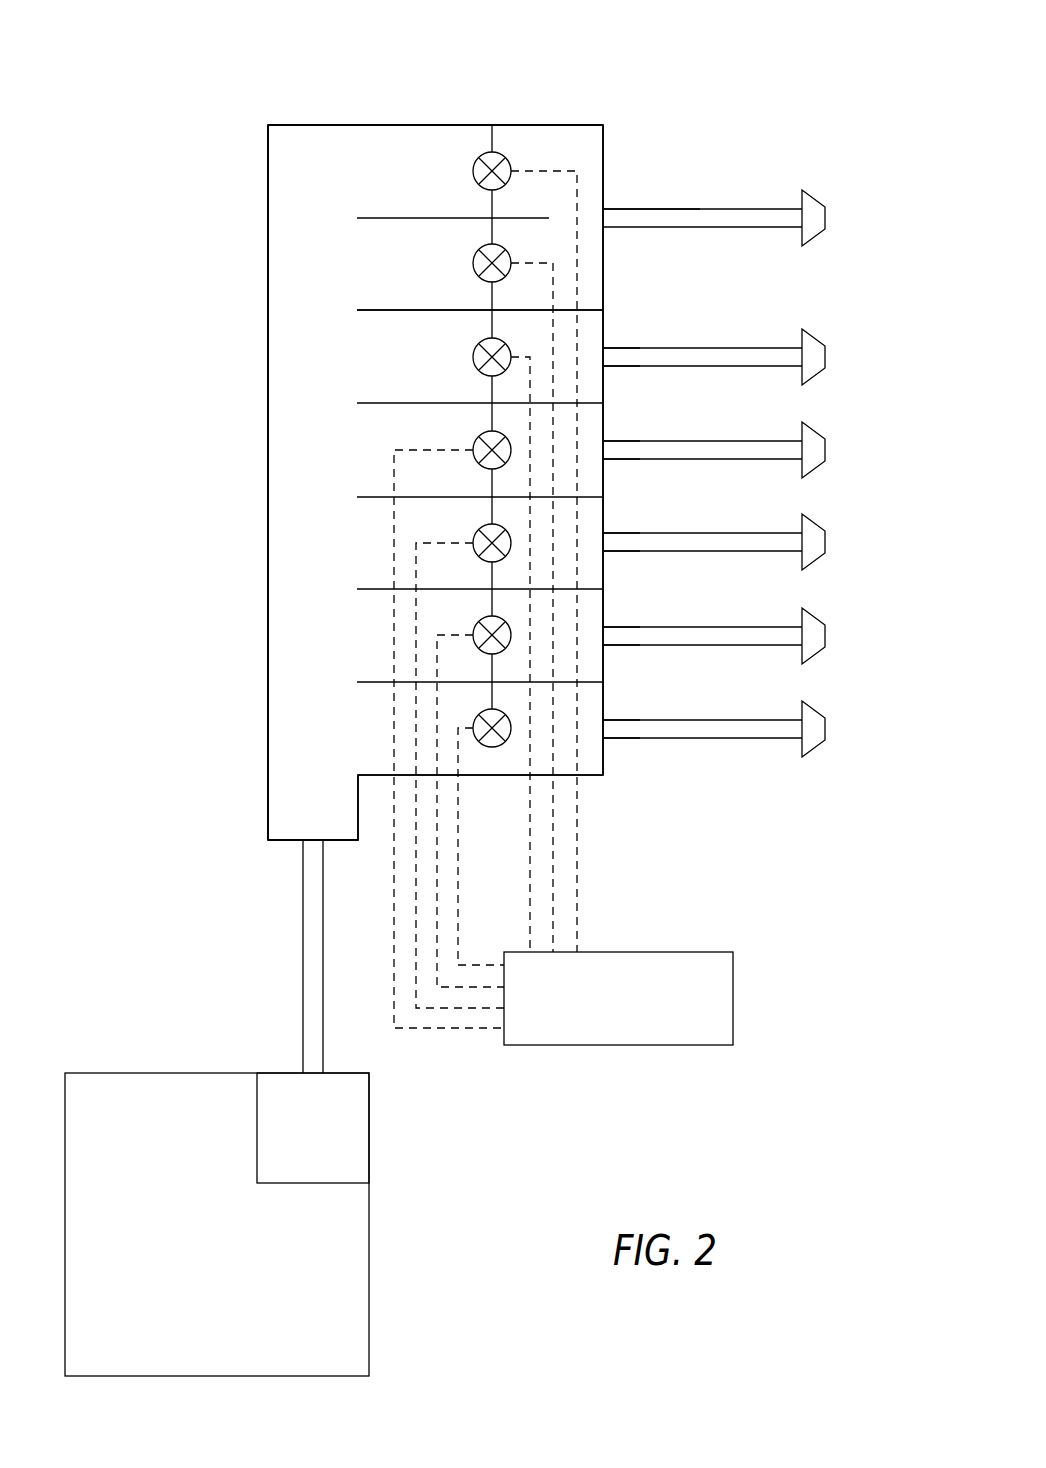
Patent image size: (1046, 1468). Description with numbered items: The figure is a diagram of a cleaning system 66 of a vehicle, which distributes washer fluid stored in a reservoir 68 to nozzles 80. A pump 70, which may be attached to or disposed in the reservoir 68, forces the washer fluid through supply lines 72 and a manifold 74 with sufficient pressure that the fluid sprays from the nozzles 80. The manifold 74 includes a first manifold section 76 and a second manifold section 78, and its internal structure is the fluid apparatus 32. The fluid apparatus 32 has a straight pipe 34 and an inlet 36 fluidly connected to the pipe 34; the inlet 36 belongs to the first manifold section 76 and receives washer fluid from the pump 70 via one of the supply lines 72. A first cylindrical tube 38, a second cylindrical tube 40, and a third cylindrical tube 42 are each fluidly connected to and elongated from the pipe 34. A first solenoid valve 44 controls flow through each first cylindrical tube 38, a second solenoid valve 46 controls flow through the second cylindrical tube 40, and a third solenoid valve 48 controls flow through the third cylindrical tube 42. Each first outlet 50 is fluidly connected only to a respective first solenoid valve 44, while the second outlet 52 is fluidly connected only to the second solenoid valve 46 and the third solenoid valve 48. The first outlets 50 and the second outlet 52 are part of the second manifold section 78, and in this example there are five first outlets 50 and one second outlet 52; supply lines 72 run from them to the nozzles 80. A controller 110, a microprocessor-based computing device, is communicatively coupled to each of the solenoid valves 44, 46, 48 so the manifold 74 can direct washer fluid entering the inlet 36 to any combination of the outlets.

The fluid apparatus 32 is at (474, 77).
The straight pipe 34 is at (307, 385).
The inlet 36 is at (283, 818).
The first cylindrical tube 38 is at (604, 369).
The second cylindrical tube 40 is at (385, 263).
The third cylindrical tube 42 is at (385, 171).
The first solenoid valve 44 is at (477, 364).
The second solenoid valve 46 is at (476, 270).
The third solenoid valve 48 is at (476, 178).
The first outlet 50 is at (606, 353).
The second outlet 52 is at (606, 214).
The cleaning system 66 is at (96, 172).
The reservoir 68 is at (369, 1238).
The pump 70 is at (369, 1125).
The supply line 72 is at (697, 227).
The manifold 74 is at (312, 117).
The first manifold section 76 is at (370, 124).
The second manifold section 78 is at (560, 124).
The nozzle 80 is at (825, 218).
The controller 110 is at (733, 972).